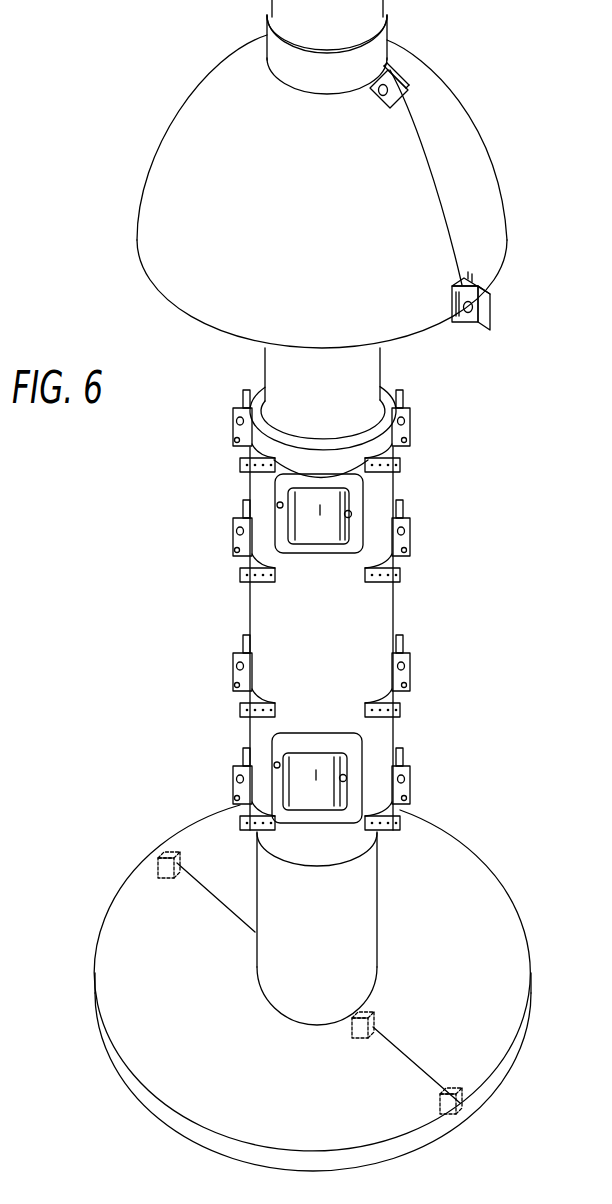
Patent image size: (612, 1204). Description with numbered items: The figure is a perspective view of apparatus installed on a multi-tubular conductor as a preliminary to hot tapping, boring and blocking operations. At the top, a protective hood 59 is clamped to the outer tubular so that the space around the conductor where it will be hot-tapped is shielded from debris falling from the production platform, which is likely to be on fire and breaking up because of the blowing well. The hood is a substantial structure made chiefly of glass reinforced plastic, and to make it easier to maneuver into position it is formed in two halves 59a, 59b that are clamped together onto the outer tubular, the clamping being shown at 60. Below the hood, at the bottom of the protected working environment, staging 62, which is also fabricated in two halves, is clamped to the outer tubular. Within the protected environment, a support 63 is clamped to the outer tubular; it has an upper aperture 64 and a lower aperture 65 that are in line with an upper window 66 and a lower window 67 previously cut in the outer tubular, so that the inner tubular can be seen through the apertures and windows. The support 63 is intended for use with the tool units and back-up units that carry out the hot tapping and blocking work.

The protective hood 59 is at (356, 178).
The hood half 59a is at (450, 117).
The hood half 59b is at (219, 78).
The clamp 60 is at (391, 76).
The staging 62 is at (127, 950).
The support 63 is at (328, 608).
The upper aperture 64 is at (327, 513).
The lower aperture 65 is at (326, 770).
The upper window 66 is at (351, 516).
The lower window 67 is at (347, 780).